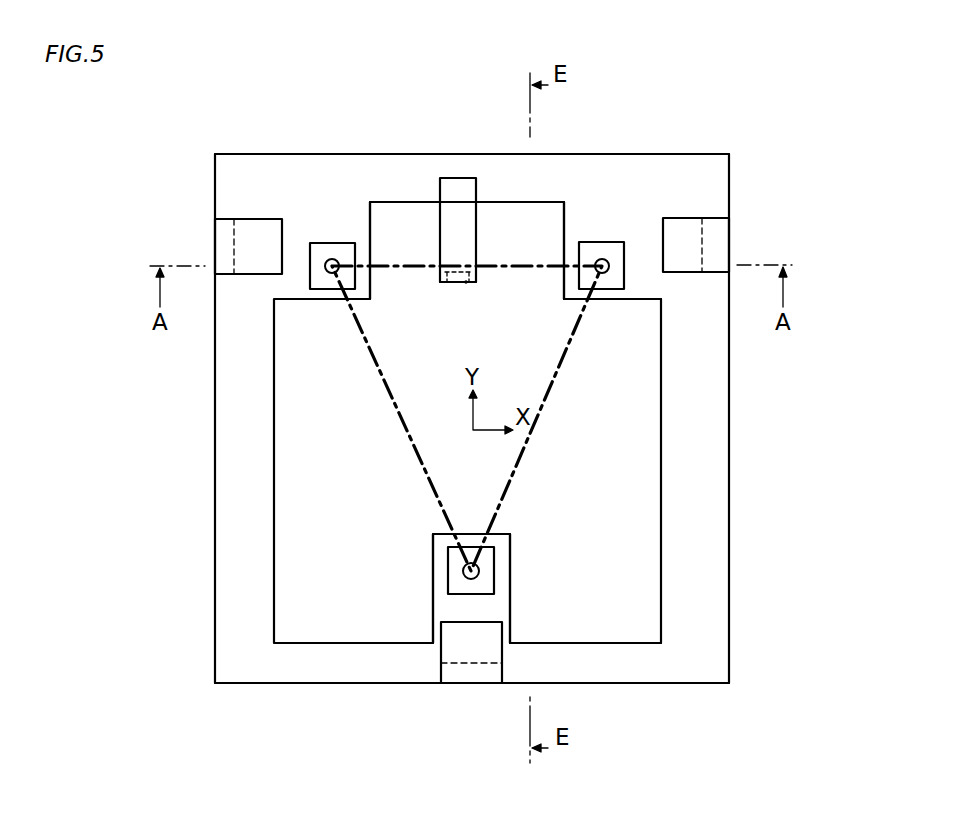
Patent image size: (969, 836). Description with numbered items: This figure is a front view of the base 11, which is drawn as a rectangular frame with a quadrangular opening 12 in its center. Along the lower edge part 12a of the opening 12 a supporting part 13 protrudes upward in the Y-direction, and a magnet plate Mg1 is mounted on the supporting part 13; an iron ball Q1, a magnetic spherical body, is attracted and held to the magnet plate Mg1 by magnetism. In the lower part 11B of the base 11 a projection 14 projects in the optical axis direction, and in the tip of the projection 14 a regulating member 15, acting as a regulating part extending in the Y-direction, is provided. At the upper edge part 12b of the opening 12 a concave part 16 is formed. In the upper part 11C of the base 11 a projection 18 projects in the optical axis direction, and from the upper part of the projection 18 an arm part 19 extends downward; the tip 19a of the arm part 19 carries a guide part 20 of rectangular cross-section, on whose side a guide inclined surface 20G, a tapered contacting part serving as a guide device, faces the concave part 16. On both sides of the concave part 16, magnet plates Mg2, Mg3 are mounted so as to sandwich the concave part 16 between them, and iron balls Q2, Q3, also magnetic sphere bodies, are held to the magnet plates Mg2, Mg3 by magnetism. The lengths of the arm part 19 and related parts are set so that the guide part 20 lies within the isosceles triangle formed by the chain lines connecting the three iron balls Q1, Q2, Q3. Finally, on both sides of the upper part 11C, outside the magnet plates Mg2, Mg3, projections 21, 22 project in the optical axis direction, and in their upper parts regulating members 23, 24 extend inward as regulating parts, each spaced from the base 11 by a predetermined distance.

The base 11 is at (732, 567).
The lower part of the base 11B is at (308, 663).
The upper part of the base 11C is at (470, 168).
The opening 12 is at (662, 452).
The lower edge part of the opening 12a is at (580, 643).
The upper edge part of the opening 12b is at (622, 299).
The supporting part 13 is at (510, 597).
The projection 14 is at (469, 683).
The regulating member 15 is at (498, 652).
The concave part 16 is at (497, 207).
The projection 18 is at (440, 178).
The arm part 19 is at (440, 230).
The guide end portion 19a is at (450, 282).
The guide part 20 is at (457, 282).
The guide inclined surface 20G is at (468, 282).
The projection 21 is at (215, 233).
The projection 22 is at (729, 234).
The regulating member 23 is at (254, 230).
The regulating member 24 is at (682, 227).
The magnet plate Mg1 is at (447, 568).
The magnet plate Mg2 is at (321, 243).
The magnet plate Mg3 is at (597, 242).
The iron ball Q1 is at (471, 579).
The iron ball Q2 is at (332, 259).
The iron ball Q3 is at (598, 259).